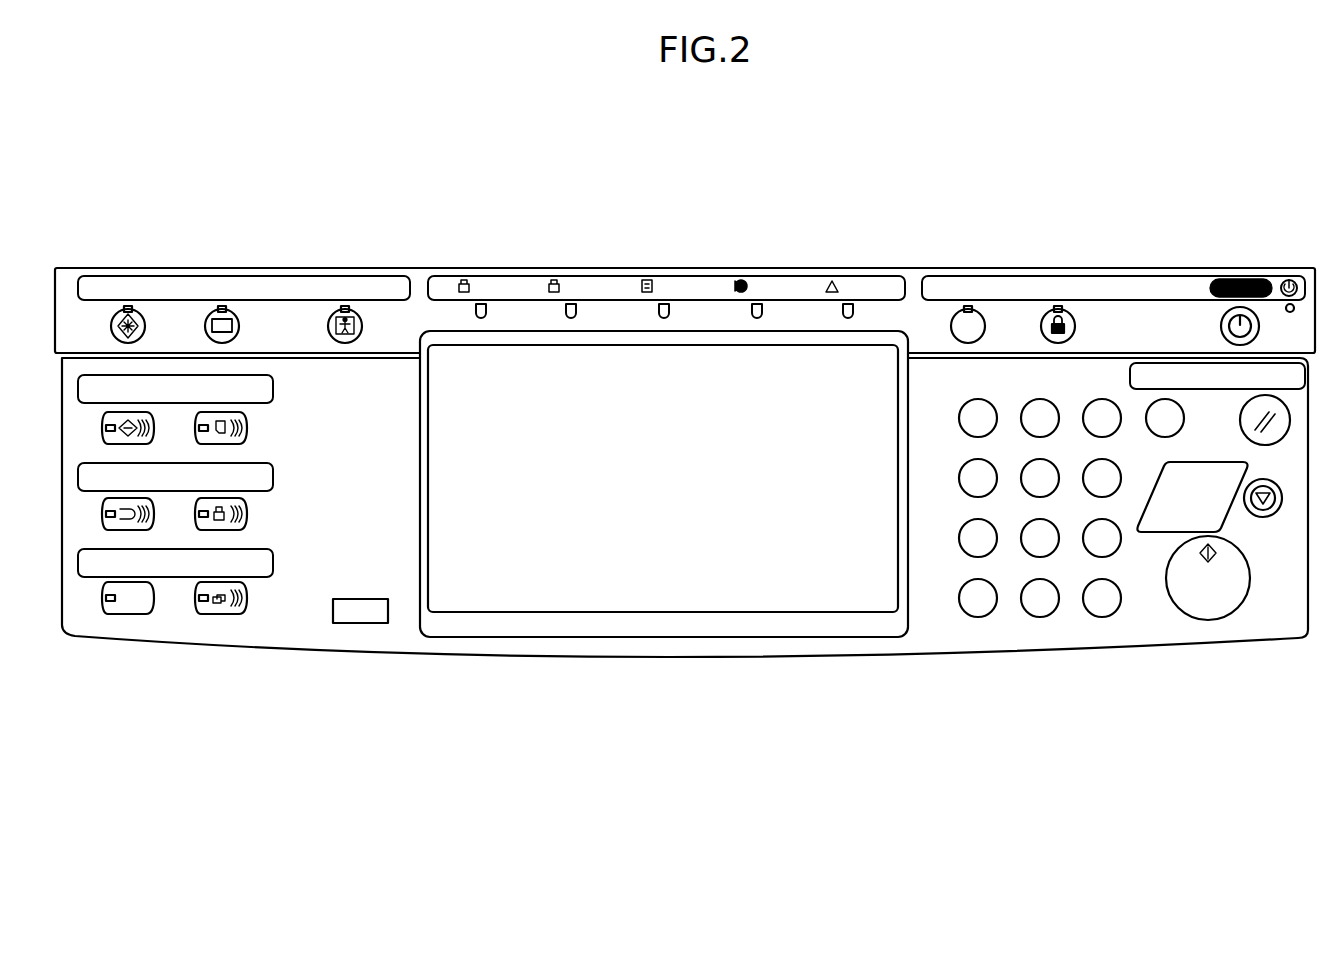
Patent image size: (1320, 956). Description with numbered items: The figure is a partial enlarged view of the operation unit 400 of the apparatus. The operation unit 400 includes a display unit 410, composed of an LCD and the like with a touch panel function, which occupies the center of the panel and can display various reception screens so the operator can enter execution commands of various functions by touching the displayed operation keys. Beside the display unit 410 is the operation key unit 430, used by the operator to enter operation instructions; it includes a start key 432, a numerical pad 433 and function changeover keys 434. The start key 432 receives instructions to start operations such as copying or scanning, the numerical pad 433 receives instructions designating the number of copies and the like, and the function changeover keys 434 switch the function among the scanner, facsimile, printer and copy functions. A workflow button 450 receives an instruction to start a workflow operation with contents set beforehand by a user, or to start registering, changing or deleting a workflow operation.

The operation unit 400 is at (685, 462).
The display unit 410 is at (564, 577).
The operation key unit 430 is at (1281, 606).
The start key 432 is at (1200, 600).
The numerical pad 433 is at (953, 615).
The function changeover keys 434 is at (278, 592).
The workflow button 450 is at (353, 612).